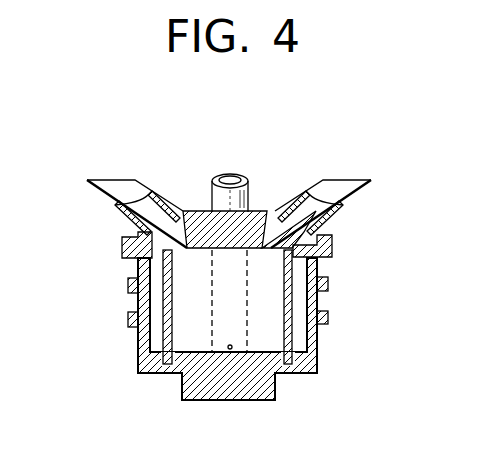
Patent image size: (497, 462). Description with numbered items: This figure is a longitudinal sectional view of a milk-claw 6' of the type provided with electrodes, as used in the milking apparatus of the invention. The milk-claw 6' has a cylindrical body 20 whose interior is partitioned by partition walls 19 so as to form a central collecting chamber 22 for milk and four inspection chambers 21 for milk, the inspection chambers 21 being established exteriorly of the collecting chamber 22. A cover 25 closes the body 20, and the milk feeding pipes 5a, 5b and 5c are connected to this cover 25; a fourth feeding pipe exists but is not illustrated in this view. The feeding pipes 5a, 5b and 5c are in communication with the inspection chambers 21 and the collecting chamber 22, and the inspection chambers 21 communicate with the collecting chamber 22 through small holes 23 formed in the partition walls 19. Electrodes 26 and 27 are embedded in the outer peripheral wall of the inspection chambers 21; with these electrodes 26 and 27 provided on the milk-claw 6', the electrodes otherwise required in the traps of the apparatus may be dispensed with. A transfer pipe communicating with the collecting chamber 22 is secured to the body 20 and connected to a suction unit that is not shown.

The milk-claw 6' is at (224, 274).
The milk feeding pipe 5a is at (312, 212).
The milk feeding pipe 5b is at (212, 183).
The milk feeding pipe 5c is at (113, 183).
The partition wall 19 is at (296, 259).
The cylindrical body 20 is at (312, 339).
The inspection chamber 21 is at (155, 344).
The collecting chamber 22 is at (242, 281).
The small hole 23 is at (228, 345).
The cover 25 is at (260, 212).
The electrode 26 is at (328, 281).
The electrode 27 is at (328, 316).